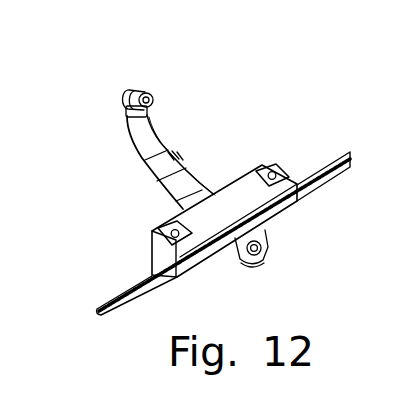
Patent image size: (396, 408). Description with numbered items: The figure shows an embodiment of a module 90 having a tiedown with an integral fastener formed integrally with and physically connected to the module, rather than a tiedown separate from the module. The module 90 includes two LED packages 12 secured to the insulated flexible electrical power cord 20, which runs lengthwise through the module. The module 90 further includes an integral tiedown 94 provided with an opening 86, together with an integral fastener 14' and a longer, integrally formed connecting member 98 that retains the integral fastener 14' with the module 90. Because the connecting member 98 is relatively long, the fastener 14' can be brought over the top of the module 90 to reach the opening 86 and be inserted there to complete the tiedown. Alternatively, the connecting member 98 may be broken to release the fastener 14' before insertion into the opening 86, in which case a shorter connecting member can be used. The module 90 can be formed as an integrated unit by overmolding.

The LED package 12 is at (172, 230).
The integral fastener 14' is at (152, 73).
The insulated flexible electrical power cord 20 is at (328, 165).
The opening 86 is at (262, 241).
The module 90 is at (229, 129).
The integral tiedown 94 is at (279, 284).
The connecting member 98 is at (138, 139).